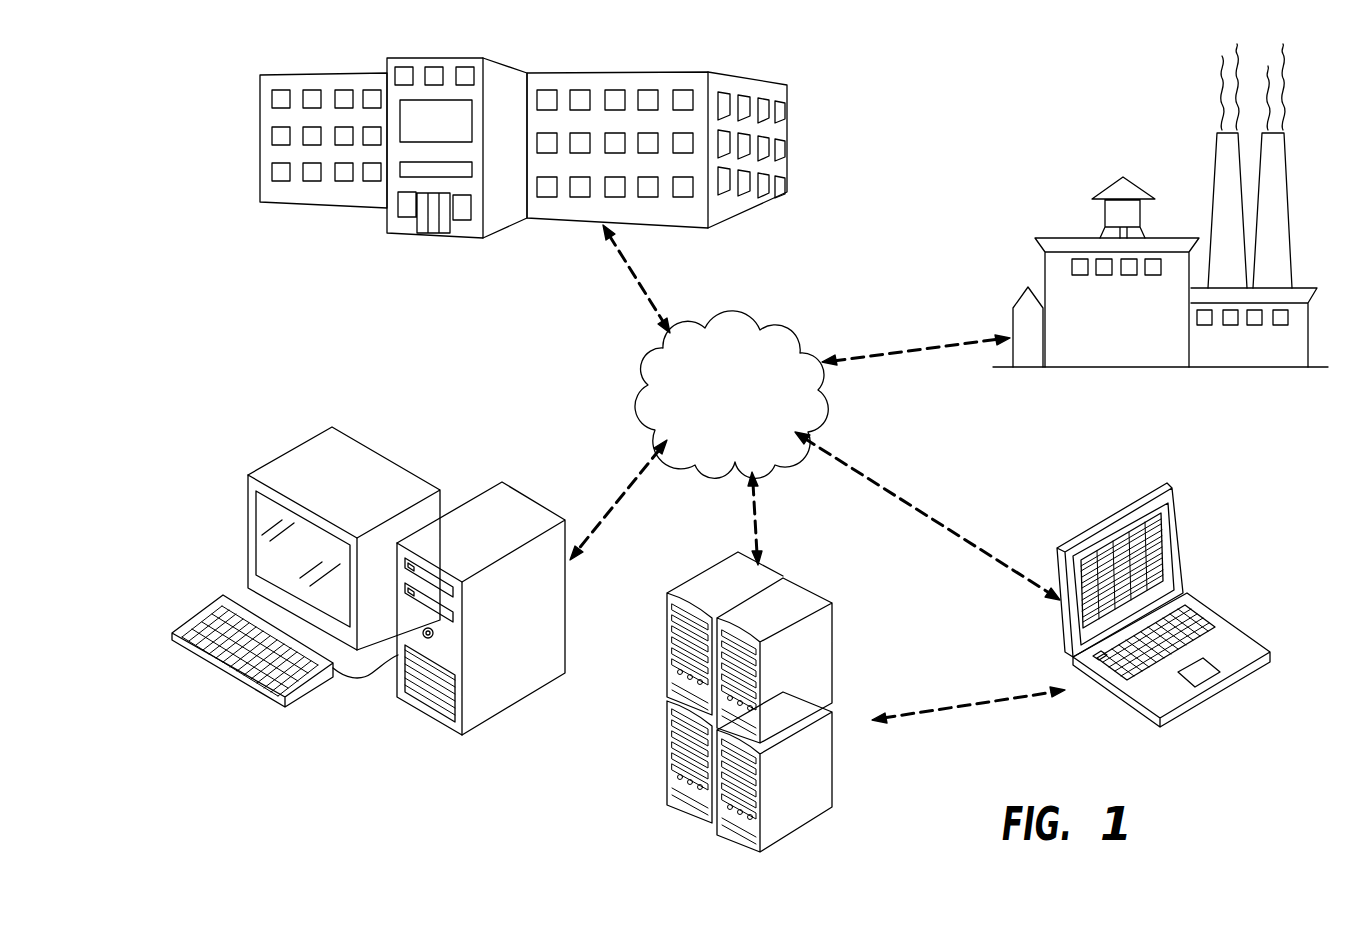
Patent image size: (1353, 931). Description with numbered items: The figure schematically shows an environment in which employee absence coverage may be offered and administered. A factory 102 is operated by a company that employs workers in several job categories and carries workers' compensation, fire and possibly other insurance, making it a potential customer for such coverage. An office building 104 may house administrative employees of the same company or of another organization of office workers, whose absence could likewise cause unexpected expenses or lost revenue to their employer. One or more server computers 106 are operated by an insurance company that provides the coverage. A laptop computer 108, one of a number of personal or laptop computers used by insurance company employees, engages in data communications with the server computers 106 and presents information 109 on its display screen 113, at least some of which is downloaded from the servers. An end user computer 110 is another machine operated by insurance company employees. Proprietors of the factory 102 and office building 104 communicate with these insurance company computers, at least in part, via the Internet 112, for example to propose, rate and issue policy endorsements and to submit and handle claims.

The factory 102 is at (1102, 367).
The office building 104 is at (407, 233).
The server computers 106 is at (833, 652).
The laptop computer 108 is at (1184, 600).
The information 109 is at (1135, 538).
The end user computer 110 is at (478, 495).
The Internet 112 is at (787, 327).
The display screen 113 is at (1152, 565).